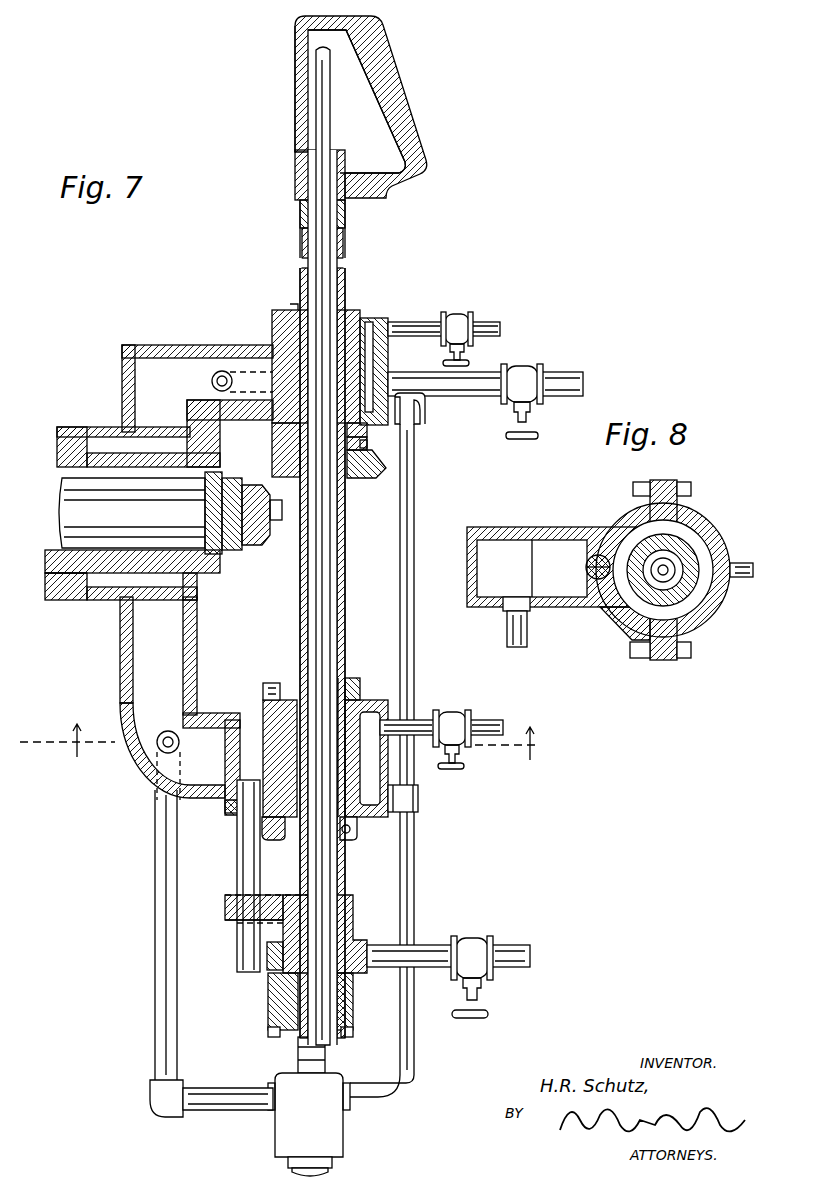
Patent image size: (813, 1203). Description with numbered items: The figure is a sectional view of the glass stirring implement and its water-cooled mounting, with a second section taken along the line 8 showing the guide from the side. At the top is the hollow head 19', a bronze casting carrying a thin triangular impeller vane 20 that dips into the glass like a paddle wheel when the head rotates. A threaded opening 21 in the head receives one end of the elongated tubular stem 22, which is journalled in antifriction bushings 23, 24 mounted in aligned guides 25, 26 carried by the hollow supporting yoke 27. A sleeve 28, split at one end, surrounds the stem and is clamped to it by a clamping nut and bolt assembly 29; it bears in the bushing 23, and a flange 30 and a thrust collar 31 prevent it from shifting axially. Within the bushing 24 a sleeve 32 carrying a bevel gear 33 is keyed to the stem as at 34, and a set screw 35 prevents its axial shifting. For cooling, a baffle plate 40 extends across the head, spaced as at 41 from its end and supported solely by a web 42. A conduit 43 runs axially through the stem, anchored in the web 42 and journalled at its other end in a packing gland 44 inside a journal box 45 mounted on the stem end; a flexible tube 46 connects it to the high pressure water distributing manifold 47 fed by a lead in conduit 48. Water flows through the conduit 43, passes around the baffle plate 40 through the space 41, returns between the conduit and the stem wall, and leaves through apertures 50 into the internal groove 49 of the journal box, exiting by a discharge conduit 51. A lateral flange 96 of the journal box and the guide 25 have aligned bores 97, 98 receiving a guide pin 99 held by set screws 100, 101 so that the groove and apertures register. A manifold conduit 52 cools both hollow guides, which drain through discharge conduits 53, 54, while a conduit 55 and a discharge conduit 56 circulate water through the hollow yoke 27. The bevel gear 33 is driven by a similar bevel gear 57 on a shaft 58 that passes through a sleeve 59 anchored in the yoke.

In FIG. 7, the hollow head 19' is at (269, 89).
In FIG. 7, the impeller vane 20 is at (408, 112).
In FIG. 7, the threaded opening 21 is at (302, 208).
In FIG. 7, the tubular stem 22 is at (300, 276).
In FIG. 8, the tubular stem 22 is at (712, 608).
In FIG. 7, the antifriction bushing 23 is at (366, 712).
In FIG. 8, the antifriction bushing 23 is at (696, 548).
In FIG. 7, the antifriction bushing 24 is at (352, 312).
In FIG. 7, the guide 25 is at (263, 708).
In FIG. 8, the guide 25 is at (690, 520).
In FIG. 7, the guide 26 is at (385, 318).
In FIG. 7, the hollow supporting yoke 27 is at (132, 345).
In FIG. 8, the hollow supporting yoke 27 is at (505, 527).
In FIG. 7, the sleeve 28 is at (340, 680).
In FIG. 8, the sleeve 28 is at (700, 560).
In FIG. 7, the clamping nut and bolt assembly 29 is at (356, 836).
In FIG. 7, the flange 30 is at (270, 840).
In FIG. 7, the thrust collar 31 is at (358, 680).
In FIG. 7, the sleeve 32 is at (348, 304).
In FIG. 7, the bevel gear 33 is at (300, 440).
In FIG. 7, the key 34 is at (362, 478).
In FIG. 7, the set screw 35 is at (370, 444).
In FIG. 7, the baffle plate 40 is at (331, 120).
In FIG. 7, the space 41 is at (338, 42).
In FIG. 7, the web 42 is at (300, 160).
In FIG. 7, the conduit 43 is at (338, 232).
In FIG. 8, the conduit 43 is at (632, 625).
In FIG. 7, the packing gland 44 is at (352, 1000).
In FIG. 7, the journal box 45 is at (268, 1000).
In FIG. 7, the flexible tube 46 is at (326, 1056).
In FIG. 7, the water distributing manifold 47 is at (309, 1115).
In FIG. 7, the lead in conduit 48 is at (332, 1166).
In FIG. 7, the internal groove 49 is at (268, 960).
In FIG. 7, the apertures 50 is at (352, 930).
In FIG. 7, the discharge conduit 51 is at (412, 958).
In FIG. 7, the manifold conduit 52 is at (414, 860).
In FIG. 7, the discharge conduit 53 is at (478, 720).
In FIG. 8, the discharge conduit 53 is at (740, 563).
In FIG. 7, the discharge conduit 54 is at (484, 322).
In FIG. 7, the conduit 55 is at (156, 896).
In FIG. 8, the conduit 55 is at (528, 628).
In FIG. 7, the discharge conduit 56 is at (498, 376).
In FIG. 7, the bevel gear 57 is at (250, 555).
In FIG. 7, the shaft 58 is at (80, 502).
In FIG. 7, the sleeve 59 is at (58, 550).
In FIG. 7, the section line 8 is at (289, 742).
In FIG. 7, the lateral flange 96 is at (232, 920).
In FIG. 7, the axial bore 97 is at (228, 898).
In FIG. 7, the axial bore 98 is at (232, 812).
In FIG. 8, the axial bore 98 is at (598, 555).
In FIG. 7, the guide pin 99 is at (245, 854).
In FIG. 8, the guide pin 99 is at (594, 580).
In FIG. 7, the set screw 100 is at (228, 908).
In FIG. 7, the set screw 101 is at (180, 756).